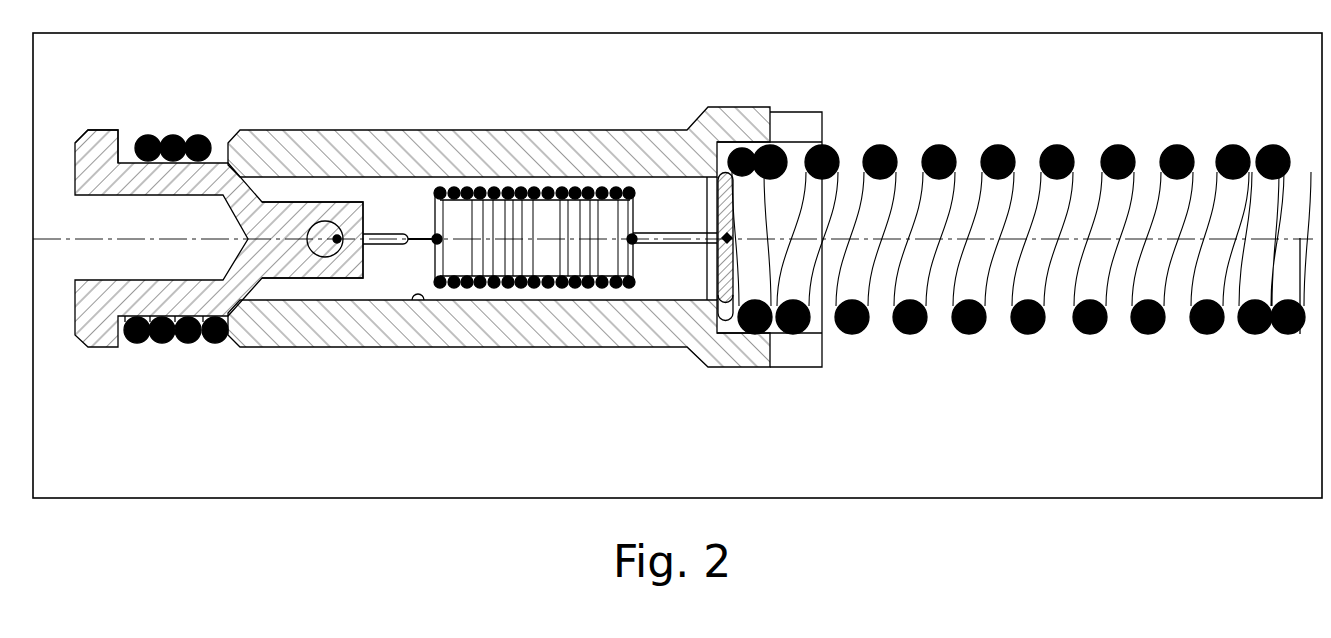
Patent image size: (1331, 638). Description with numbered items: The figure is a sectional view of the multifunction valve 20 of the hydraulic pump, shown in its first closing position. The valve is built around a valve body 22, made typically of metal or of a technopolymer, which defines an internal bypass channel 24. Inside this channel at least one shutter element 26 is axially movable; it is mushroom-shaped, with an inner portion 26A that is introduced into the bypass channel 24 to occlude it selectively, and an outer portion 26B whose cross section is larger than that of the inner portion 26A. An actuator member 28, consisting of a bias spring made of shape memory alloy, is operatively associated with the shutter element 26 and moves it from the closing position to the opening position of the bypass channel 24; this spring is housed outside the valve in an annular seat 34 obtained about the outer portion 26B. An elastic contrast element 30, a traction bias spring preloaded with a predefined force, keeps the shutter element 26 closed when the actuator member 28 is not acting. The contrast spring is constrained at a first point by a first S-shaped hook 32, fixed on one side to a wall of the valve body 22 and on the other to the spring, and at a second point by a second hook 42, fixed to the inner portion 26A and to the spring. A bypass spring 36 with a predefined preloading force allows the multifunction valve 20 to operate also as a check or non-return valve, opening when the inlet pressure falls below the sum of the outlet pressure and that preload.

The multifunction valve 20 is at (530, 371).
The valve body 22 is at (400, 158).
The bypass channel 24 is at (417, 295).
The shutter element 26 is at (323, 282).
The inner portion 26A is at (288, 218).
The outer portion 26B is at (105, 130).
The actuator member 28 is at (172, 135).
The elastic contrast element 30 is at (549, 190).
The first S-shaped hook 32 is at (718, 170).
The annular seat 34 is at (133, 345).
The bypass spring 36 is at (880, 148).
The second hook 42 is at (383, 232).